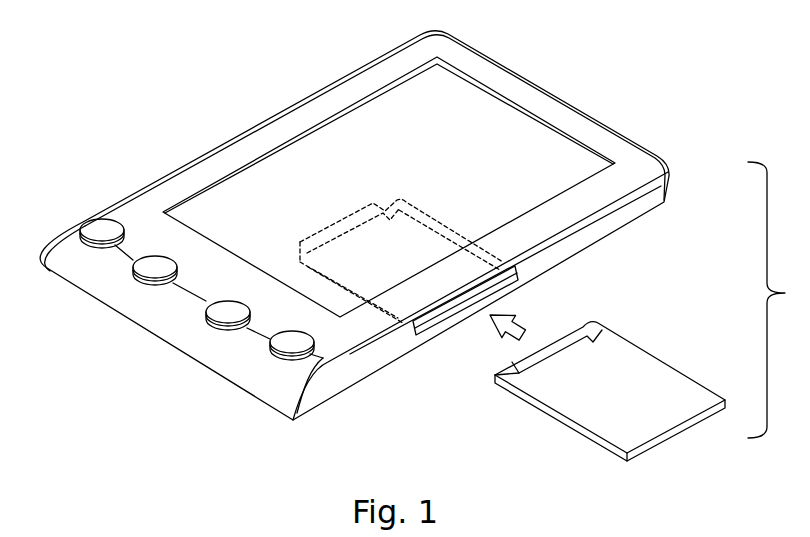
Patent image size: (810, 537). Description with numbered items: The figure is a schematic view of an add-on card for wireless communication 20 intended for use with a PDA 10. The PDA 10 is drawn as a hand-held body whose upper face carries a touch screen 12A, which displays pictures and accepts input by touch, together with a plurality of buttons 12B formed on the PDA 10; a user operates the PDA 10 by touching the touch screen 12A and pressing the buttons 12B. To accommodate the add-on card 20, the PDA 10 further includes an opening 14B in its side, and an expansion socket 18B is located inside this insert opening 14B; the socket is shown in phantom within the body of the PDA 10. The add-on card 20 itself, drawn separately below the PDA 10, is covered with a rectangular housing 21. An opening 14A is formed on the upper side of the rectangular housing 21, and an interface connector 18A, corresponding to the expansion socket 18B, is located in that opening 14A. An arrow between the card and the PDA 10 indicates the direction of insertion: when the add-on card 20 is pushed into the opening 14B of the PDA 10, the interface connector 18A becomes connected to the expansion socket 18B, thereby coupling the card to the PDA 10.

The PDA 10 is at (667, 113).
The touch screen 12A is at (452, 97).
The buttons 12B is at (102, 230).
The opening 14A is at (586, 346).
The opening 14B is at (505, 287).
The interface connector 18A is at (517, 368).
The expansion socket 18B is at (338, 234).
The add-on card for wireless communication 20 is at (562, 423).
The rectangular housing 21 is at (642, 432).